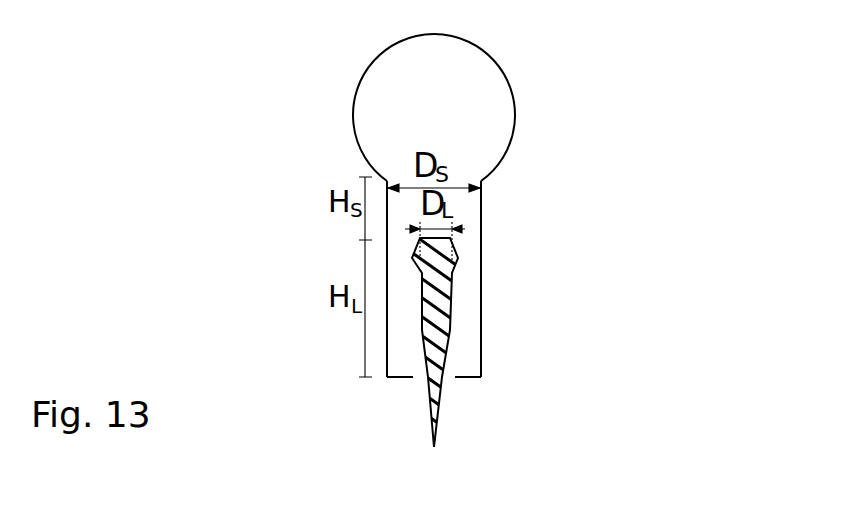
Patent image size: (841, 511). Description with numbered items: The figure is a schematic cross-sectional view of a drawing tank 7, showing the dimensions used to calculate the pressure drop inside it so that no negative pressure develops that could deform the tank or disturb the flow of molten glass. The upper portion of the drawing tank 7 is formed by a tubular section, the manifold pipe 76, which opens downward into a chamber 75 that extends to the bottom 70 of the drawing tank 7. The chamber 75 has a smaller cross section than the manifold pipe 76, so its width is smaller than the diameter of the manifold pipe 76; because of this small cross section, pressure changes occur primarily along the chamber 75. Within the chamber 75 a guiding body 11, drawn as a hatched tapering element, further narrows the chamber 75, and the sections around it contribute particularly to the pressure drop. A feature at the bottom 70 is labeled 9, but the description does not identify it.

The drawing tank 7 is at (539, 249).
The manifold pipe 76 is at (510, 86).
The chamber 75 is at (482, 305).
The bottom 70 is at (468, 379).
The opening 9 is at (413, 378).
The guiding body 11 is at (437, 420).